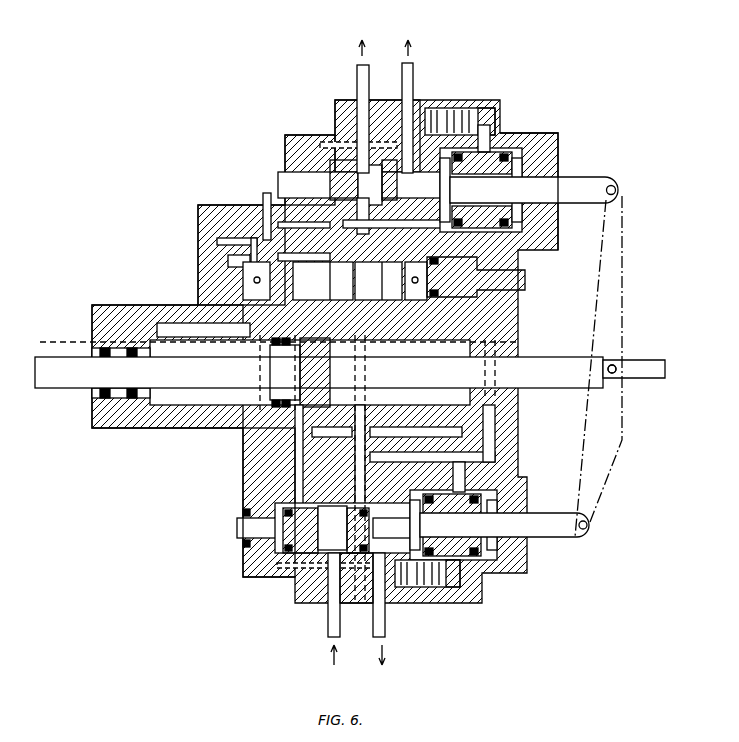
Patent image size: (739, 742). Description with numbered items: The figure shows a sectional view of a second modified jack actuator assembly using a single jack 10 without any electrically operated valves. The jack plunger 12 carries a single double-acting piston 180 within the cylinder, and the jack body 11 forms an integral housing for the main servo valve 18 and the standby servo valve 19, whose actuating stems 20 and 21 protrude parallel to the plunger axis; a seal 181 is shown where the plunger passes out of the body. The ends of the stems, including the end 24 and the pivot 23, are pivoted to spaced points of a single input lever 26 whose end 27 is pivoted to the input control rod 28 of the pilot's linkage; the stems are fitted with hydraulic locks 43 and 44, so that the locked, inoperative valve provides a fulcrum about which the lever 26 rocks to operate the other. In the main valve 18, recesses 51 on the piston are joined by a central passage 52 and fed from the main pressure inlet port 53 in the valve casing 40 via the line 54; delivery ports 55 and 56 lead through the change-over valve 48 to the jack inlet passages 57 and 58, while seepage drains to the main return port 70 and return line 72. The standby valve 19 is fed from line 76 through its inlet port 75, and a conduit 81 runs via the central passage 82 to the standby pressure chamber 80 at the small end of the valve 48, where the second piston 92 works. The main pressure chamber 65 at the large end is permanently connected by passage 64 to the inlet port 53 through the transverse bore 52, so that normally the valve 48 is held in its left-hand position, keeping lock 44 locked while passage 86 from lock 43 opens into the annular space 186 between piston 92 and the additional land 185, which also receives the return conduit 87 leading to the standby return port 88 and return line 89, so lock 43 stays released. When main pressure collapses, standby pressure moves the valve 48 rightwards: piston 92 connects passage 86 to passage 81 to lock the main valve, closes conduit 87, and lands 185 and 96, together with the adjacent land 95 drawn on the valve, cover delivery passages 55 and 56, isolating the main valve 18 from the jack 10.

The jack 10 is at (181, 403).
The jack body 11 is at (185, 430).
The jack plunger 12 is at (68, 366).
The main servo valve 18 is at (290, 553).
The standby servo valve 19 is at (340, 172).
The valve stem 20 is at (554, 527).
The valve stem 21 is at (571, 175).
The pivot pin 23 is at (612, 184).
The end of valve stem 24 is at (592, 523).
The input lever 26 is at (612, 447).
The end of input lever 27 is at (617, 373).
The input control rod 28 is at (637, 362).
The valve casing 40 is at (563, 133).
The hydraulic lock 43 is at (477, 562).
The hydraulic lock 44 is at (502, 147).
The change-over valve 48 is at (478, 280).
The recesses 51 is at (357, 497).
The central passage 52 is at (332, 528).
The main pressure inlet port 53 is at (298, 578).
The line 54 is at (328, 621).
The pressure fluid delivery port 55 is at (296, 472).
The pressure fluid delivery port 56 is at (361, 475).
The jack inlet passage 57 is at (348, 338).
The jack inlet passage 58 is at (376, 310).
The passage 64 is at (494, 430).
The main pressure chamber 65 is at (488, 272).
The main return port 70 is at (372, 598).
The return line 72 is at (385, 622).
The standby pressure inlet port 75 is at (373, 107).
The line 76 is at (360, 88).
The standby pressure chamber 80 is at (223, 270).
The conduit 81 is at (245, 246).
The central passage 82 is at (372, 178).
The passage 86 is at (310, 432).
The return conduit 87 is at (300, 176).
The return port 88 is at (428, 117).
The return line 89 is at (412, 83).
The second piston 92 is at (228, 267).
The valve 95 is at (393, 281).
The land 96 is at (341, 281).
The double-acting piston 180 is at (232, 405).
The seal 181 is at (155, 405).
The additional land 185 is at (285, 267).
The annular space 186 is at (238, 232).